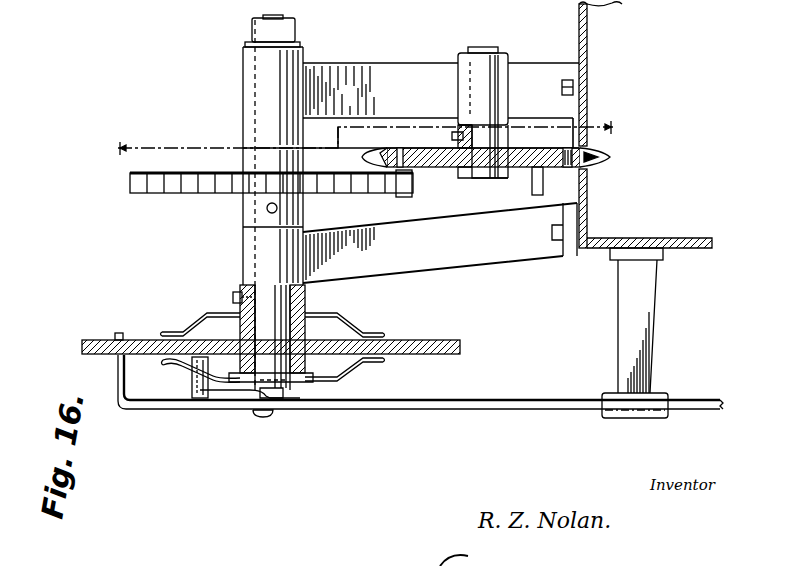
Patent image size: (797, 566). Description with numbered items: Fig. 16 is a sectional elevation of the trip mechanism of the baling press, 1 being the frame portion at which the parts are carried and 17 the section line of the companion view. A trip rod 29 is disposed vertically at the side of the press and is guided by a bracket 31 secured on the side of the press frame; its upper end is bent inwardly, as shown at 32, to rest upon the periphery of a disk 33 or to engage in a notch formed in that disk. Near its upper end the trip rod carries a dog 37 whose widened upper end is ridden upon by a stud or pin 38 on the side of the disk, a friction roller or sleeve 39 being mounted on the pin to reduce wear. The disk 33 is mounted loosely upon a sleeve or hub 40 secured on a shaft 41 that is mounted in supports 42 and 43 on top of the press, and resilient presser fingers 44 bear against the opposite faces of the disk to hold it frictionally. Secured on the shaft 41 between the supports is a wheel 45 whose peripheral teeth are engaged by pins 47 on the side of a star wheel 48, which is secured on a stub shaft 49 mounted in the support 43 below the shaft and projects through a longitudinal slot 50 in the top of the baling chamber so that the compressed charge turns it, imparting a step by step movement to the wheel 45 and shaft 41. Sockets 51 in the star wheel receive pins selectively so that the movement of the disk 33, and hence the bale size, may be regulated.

The wall / frame 1 is at (695, 238).
The section line 17- 17 is at (360, 137).
The trip rod 29 is at (518, 404).
The bracket 31 is at (618, 315).
The inwardly bent upper end 32 is at (118, 389).
The disk 33 is at (148, 340).
The dog 37 is at (232, 385).
The stud or pin 38 is at (196, 400).
The friction roller or sleeve 39 is at (178, 375).
The sleeve or hub 40 is at (240, 292).
The shaft 41 is at (272, 382).
The support 42 is at (440, 253).
The support 43 is at (435, 72).
The resilient presser fingers 44 is at (221, 372).
The wheel 45 is at (185, 183).
The pins 47 is at (400, 148).
The star wheel 48 is at (447, 158).
The stub shaft 49 is at (482, 168).
The longitudinal slot 50 is at (589, 168).
The sockets 51 is at (566, 148).